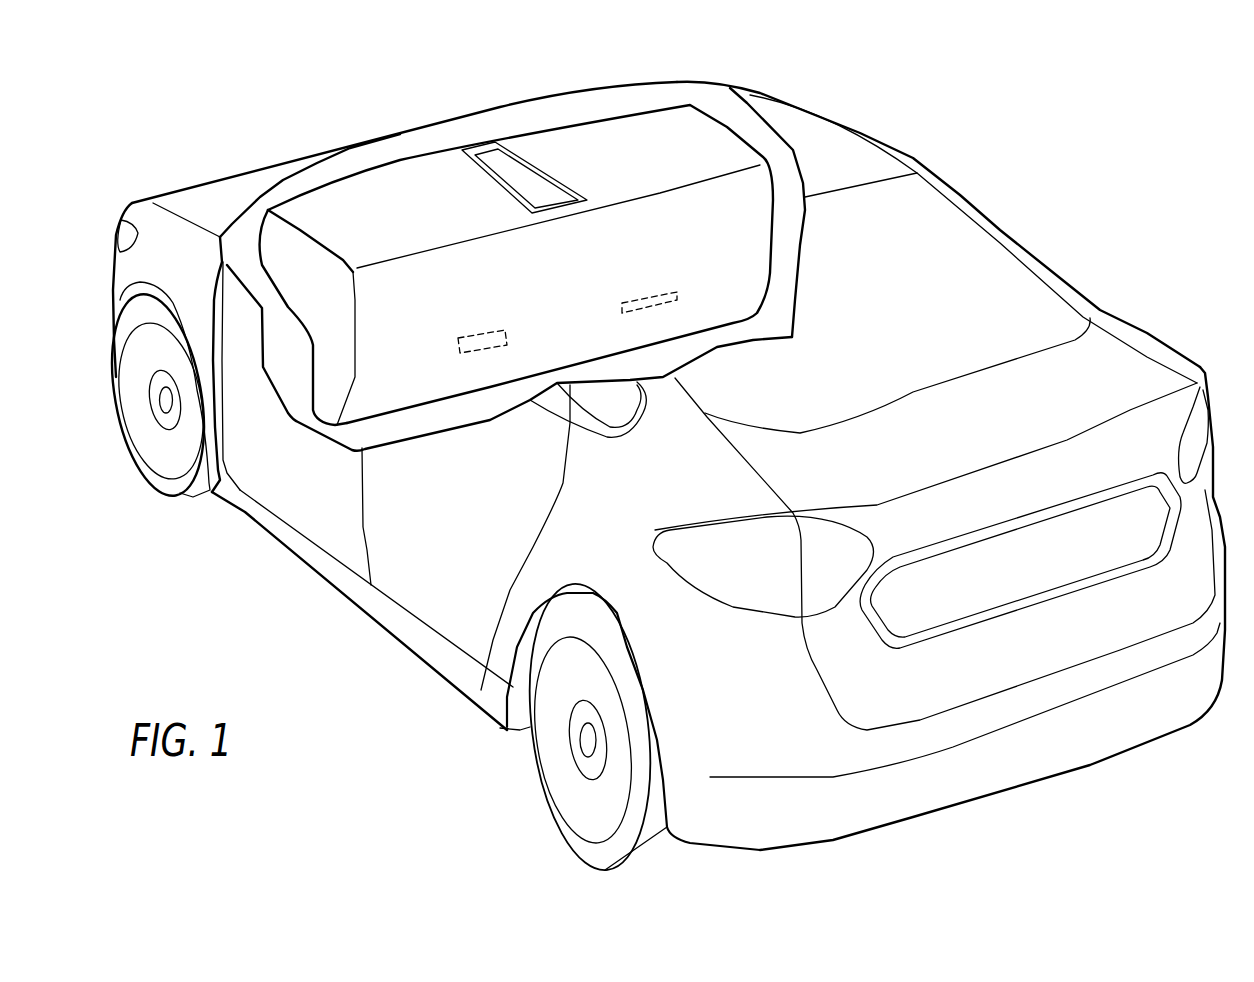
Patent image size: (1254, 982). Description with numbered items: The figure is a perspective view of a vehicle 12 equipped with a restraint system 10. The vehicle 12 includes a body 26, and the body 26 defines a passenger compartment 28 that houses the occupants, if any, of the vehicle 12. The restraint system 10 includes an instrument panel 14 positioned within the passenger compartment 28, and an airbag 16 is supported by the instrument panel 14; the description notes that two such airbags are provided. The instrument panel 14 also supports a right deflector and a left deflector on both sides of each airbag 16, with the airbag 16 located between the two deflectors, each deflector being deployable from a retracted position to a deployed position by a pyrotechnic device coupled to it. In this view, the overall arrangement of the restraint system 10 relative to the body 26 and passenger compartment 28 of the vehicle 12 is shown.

The restraint system 10 is at (731, 123).
The vehicle 12 is at (892, 96).
The instrument panel 14 is at (390, 203).
The airbag 16 is at (485, 340).
The body 26 is at (413, 658).
The passenger compartment 28 is at (783, 215).